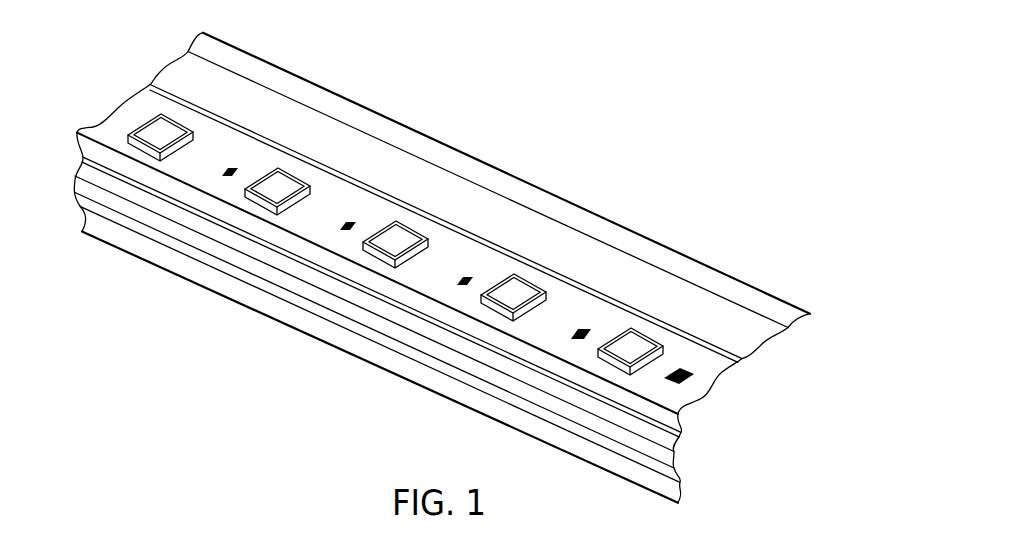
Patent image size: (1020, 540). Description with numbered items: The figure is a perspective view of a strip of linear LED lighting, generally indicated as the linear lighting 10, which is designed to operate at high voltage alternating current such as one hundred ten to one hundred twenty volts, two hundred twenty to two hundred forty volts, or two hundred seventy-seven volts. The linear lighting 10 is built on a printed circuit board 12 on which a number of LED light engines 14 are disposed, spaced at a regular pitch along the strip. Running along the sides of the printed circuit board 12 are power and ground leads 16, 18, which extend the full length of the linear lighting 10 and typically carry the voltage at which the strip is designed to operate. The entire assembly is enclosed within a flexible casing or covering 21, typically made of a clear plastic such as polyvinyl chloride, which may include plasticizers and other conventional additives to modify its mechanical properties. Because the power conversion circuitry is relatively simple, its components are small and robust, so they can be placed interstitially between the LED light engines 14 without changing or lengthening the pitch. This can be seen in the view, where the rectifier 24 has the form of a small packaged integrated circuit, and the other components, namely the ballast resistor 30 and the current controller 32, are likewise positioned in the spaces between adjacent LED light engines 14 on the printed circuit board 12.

The linear lighting 10 is at (442, 260).
The printed circuit board 12 is at (453, 248).
The LED light engines 14 is at (157, 133).
The power lead 16 is at (712, 345).
The ground lead 18 is at (460, 340).
The flexible casing or covering 21 is at (326, 89).
The rectifier 24 is at (690, 378).
The ballast resistor 30 is at (342, 228).
The current controller 32 is at (578, 336).